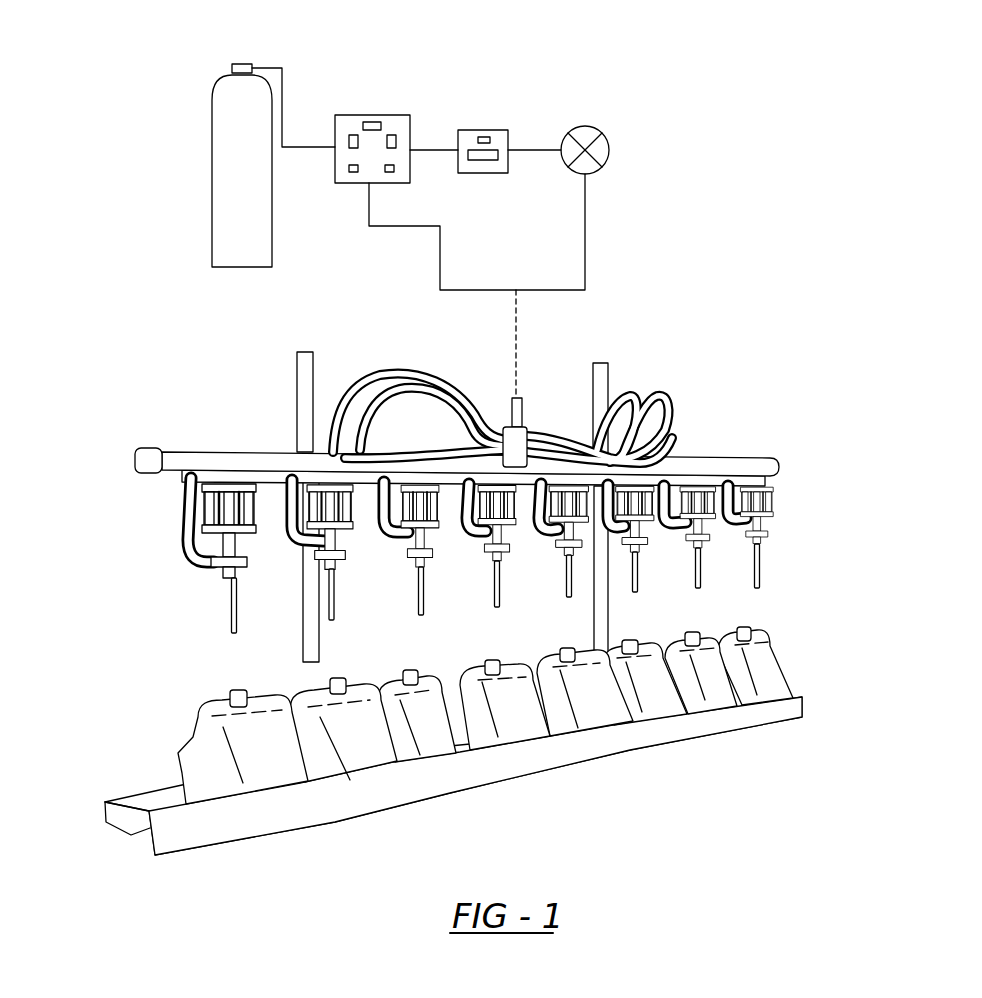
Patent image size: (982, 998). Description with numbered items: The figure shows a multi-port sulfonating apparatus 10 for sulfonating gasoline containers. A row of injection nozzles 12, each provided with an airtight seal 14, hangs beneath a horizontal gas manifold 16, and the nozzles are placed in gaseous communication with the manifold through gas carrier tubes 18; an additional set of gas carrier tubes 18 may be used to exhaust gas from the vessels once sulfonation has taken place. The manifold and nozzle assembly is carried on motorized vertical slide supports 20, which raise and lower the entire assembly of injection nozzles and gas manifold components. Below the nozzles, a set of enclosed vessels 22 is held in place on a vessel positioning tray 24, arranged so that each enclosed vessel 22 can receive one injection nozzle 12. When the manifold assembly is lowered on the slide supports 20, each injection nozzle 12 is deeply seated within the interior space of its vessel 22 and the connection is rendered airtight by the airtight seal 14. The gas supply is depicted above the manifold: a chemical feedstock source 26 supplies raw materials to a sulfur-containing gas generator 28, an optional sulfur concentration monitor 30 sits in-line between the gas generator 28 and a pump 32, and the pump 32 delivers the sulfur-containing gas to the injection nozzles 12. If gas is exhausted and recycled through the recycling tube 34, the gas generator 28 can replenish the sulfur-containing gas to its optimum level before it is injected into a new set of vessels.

The sulfonation apparatus 10 is at (640, 292).
The injection nozzle 12 is at (232, 608).
The airtight seal 14 is at (225, 570).
The gas manifold 16 is at (178, 462).
The gas carrier tube 18 is at (390, 382).
The motorized vertical slide support 20 is at (303, 380).
The enclosed vessel 22 is at (650, 693).
The vessel positioning tray 24 is at (500, 763).
The chemical feedstock source 26 is at (232, 128).
The sulfur-containing gas generator 28 is at (385, 127).
The sulfur concentration monitor 30 is at (503, 135).
The pump 32 is at (612, 148).
The recycling tube 34 is at (458, 287).